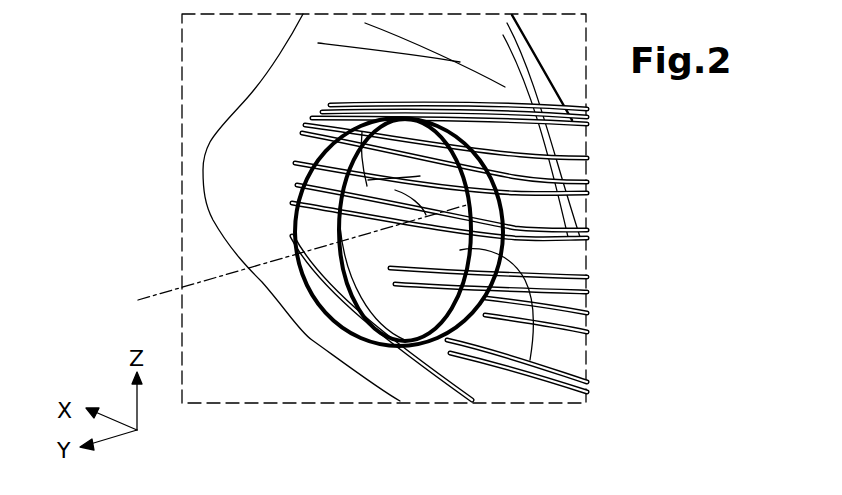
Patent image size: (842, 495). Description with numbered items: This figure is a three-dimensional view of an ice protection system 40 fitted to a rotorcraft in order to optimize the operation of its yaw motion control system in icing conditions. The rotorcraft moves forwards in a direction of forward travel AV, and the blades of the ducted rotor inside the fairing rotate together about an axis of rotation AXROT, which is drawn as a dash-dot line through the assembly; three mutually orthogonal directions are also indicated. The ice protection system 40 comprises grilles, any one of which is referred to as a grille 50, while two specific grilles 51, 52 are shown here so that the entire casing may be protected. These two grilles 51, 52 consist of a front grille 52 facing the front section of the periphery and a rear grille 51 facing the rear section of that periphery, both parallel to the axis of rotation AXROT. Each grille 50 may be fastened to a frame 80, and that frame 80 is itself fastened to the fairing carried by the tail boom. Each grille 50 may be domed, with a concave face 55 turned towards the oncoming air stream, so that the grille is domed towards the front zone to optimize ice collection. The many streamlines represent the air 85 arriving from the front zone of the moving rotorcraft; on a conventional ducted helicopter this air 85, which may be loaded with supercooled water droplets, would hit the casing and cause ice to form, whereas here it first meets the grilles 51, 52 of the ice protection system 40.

The ice protection system 40 is at (247, 305).
The grille 50 is at (400, 232).
The rear grille 51 is at (308, 220).
The front grille 52 is at (478, 199).
The concave face 55 is at (436, 307).
The frame 80 is at (530, 360).
The air 85 is at (566, 146).
The axis of rotation AXROT is at (162, 291).
The direction of forward travel AV is at (623, 322).